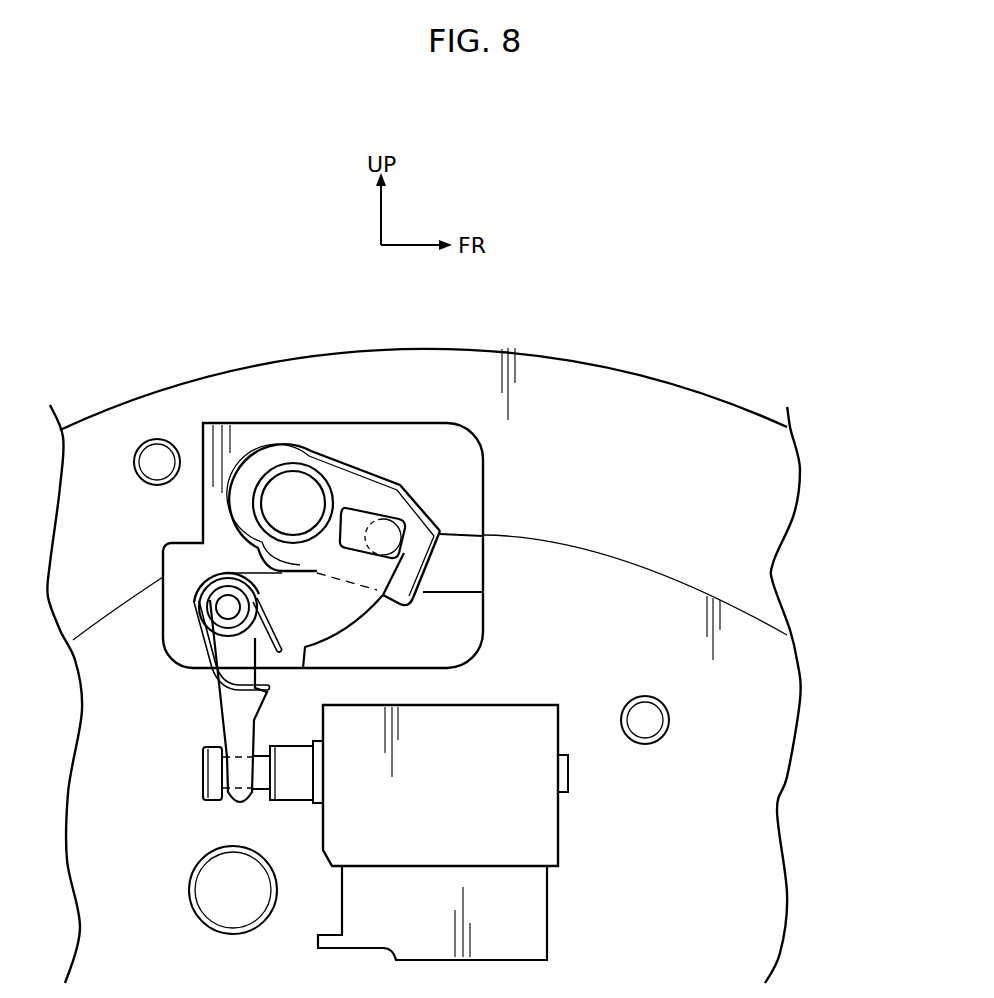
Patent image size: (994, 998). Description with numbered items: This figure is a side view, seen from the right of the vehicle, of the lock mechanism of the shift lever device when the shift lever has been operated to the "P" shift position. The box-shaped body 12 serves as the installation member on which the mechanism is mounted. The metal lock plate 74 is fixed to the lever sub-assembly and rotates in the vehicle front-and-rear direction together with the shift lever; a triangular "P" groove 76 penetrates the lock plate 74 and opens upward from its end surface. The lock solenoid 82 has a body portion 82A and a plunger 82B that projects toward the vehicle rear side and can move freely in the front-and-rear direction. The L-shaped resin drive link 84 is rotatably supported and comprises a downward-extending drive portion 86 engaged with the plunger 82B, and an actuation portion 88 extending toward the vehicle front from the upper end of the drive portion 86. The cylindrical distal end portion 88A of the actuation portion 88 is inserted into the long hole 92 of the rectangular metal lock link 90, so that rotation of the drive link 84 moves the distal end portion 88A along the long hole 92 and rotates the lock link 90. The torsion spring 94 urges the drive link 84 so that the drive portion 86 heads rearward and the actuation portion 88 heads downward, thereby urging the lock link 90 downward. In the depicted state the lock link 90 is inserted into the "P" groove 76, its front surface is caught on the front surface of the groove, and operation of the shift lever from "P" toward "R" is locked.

The body 12 is at (160, 390).
The lock plate 74 is at (460, 590).
The "P" groove 76 is at (397, 603).
The lock solenoid 82 is at (560, 705).
The body portion 82A is at (558, 823).
The plunger 82B is at (203, 793).
The drive link 84 is at (196, 584).
The drive portion 86 is at (217, 718).
The actuation portion 88 is at (355, 620).
The distal end portion 88A is at (402, 521).
The lock link 90 is at (450, 531).
The long hole 92 is at (367, 512).
The torsion spring 94 is at (227, 692).